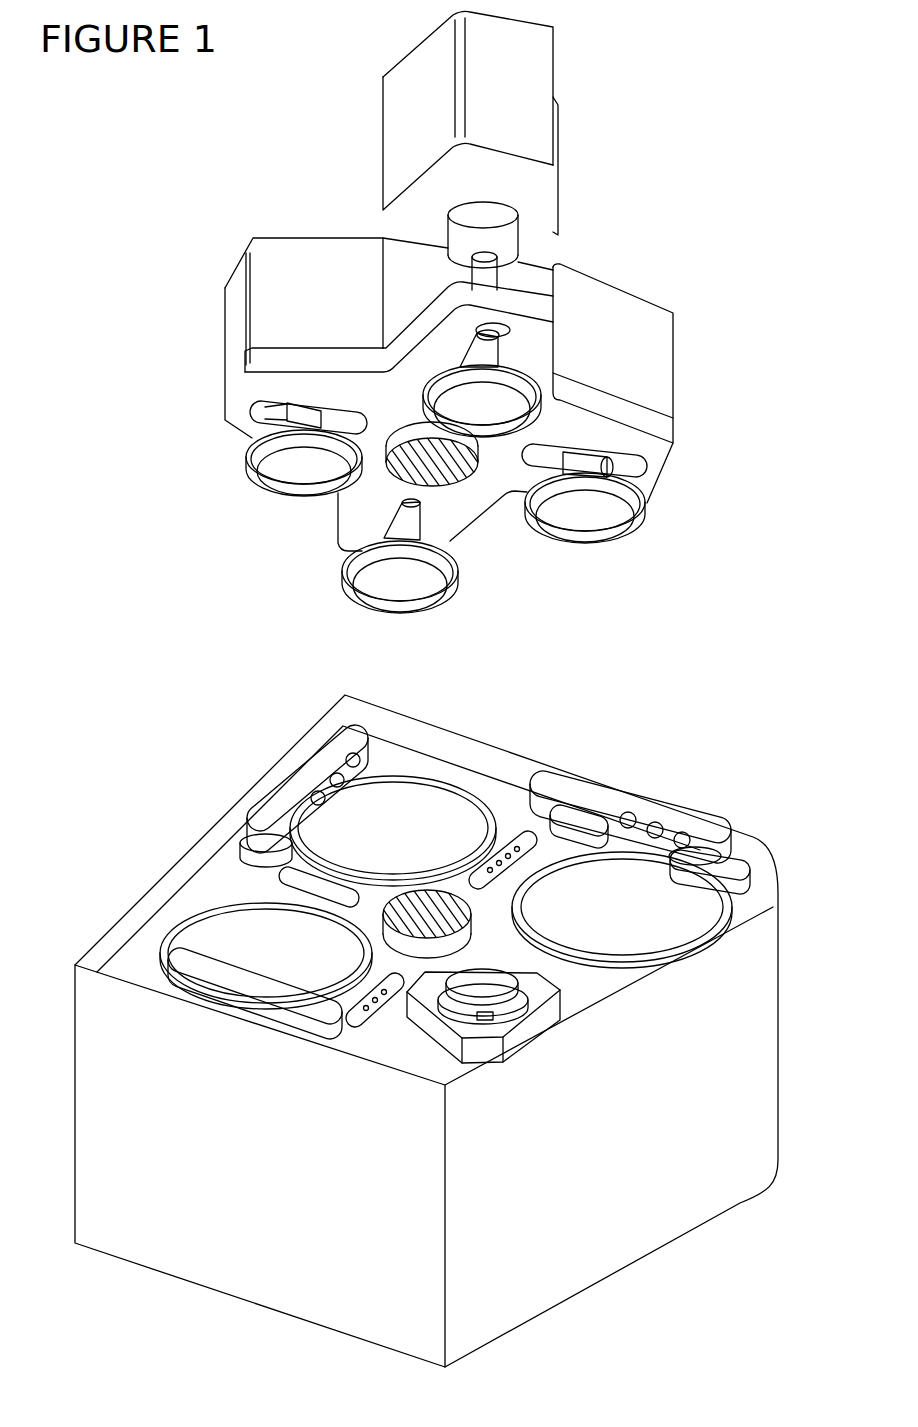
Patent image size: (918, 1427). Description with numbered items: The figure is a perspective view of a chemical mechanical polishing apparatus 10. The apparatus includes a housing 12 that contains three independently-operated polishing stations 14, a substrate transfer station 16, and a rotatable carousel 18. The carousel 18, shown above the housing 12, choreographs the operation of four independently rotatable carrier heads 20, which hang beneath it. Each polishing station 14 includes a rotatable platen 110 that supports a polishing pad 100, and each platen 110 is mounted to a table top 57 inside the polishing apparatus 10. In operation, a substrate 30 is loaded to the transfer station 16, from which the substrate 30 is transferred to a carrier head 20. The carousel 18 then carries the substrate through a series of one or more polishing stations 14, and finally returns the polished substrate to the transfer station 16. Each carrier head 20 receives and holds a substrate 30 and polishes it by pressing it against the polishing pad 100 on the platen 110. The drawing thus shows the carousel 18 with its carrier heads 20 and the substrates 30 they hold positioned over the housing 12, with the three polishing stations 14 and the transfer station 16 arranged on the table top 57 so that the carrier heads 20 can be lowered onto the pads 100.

The polishing apparatus 10 is at (322, 178).
The housing 12 is at (118, 1110).
The polishing station 14 is at (467, 780).
The substrate transfer station 16 is at (530, 1033).
The rotatable carousel 18 is at (648, 363).
The carrier head 20 is at (253, 472).
The substrate 30 is at (305, 468).
The table top 57 is at (447, 767).
The polishing pad 100 is at (567, 925).
The rotatable platen 110 is at (687, 943).